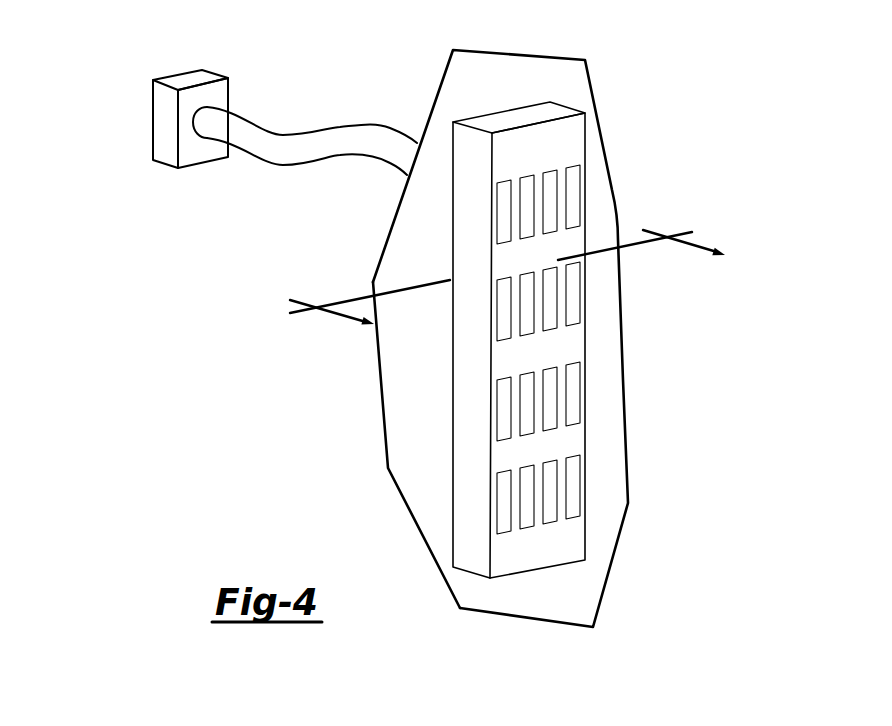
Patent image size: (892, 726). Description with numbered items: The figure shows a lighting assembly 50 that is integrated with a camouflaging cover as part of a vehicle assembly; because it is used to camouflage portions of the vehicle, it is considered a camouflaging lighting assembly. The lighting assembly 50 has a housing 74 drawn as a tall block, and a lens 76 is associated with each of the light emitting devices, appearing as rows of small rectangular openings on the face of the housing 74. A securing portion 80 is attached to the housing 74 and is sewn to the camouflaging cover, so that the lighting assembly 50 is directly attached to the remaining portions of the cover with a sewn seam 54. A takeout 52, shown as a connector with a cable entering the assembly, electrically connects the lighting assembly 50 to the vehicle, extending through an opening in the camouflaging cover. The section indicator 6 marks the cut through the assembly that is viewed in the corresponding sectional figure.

The lighting assembly 50 is at (656, 360).
The takeout 52 is at (153, 119).
The sewn seam 54 is at (383, 415).
The housing 74 is at (500, 262).
The lens 76 is at (573, 167).
The securing portion 80 is at (418, 472).
The section line 6- 6 is at (491, 258).